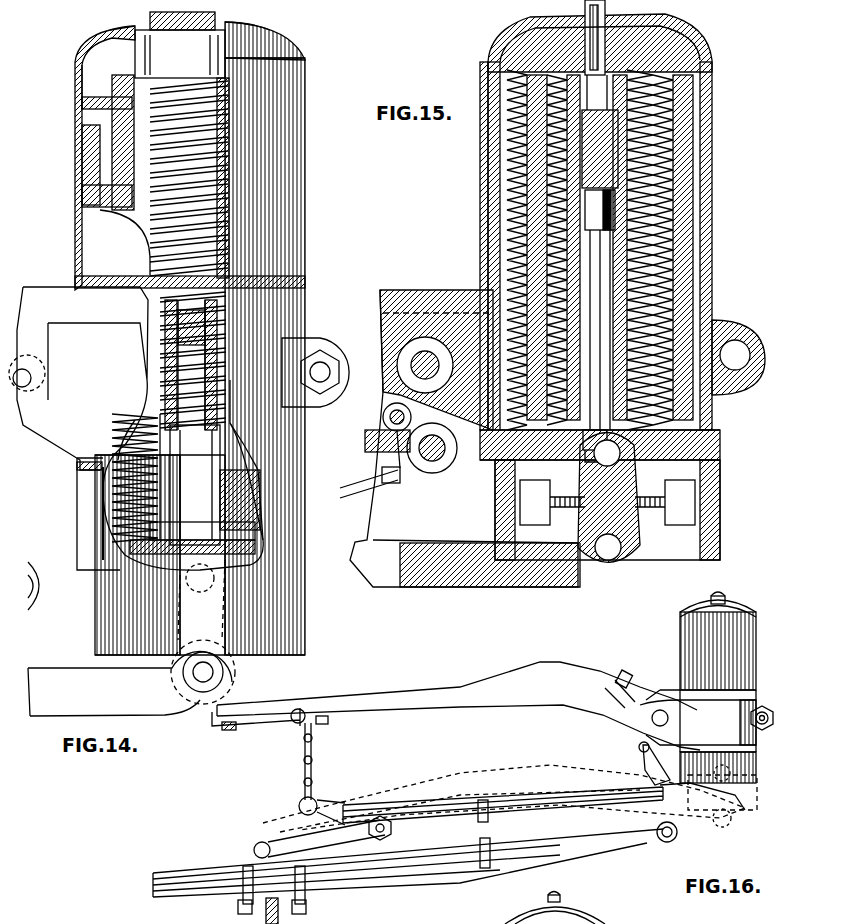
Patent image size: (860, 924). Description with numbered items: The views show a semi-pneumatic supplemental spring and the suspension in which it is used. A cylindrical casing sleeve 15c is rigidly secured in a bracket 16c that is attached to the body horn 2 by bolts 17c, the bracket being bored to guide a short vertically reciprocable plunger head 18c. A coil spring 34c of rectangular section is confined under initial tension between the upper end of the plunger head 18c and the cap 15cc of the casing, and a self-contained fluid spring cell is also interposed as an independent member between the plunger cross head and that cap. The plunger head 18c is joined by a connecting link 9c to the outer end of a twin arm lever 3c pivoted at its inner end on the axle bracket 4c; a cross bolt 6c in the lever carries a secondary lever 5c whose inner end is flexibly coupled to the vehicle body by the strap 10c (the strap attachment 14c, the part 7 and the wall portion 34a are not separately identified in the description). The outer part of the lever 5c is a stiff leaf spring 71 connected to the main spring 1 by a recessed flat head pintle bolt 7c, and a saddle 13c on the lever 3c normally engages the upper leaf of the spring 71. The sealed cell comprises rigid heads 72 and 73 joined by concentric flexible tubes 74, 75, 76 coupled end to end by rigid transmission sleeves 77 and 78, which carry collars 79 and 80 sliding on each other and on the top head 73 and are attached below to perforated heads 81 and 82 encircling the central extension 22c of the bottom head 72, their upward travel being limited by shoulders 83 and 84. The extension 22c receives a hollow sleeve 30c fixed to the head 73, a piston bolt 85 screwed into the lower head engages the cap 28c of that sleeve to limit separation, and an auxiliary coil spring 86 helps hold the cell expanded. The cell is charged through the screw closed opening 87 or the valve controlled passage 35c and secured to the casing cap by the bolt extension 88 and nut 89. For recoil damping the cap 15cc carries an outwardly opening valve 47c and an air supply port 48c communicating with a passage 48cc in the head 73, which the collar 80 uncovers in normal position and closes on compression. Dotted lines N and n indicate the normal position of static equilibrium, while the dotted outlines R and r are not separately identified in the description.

In FIG. 14, the main spring 1 is at (44, 590).
In FIG. 15, the main spring 1 is at (360, 488).
In FIG. 16, the main spring 1 is at (392, 878).
In FIG. 16, the body horn 2 is at (568, 666).
In FIG. 14, the twin arm lever 3c is at (59, 675).
In FIG. 15, the twin arm lever 3c is at (550, 587).
In FIG. 16, the twin arm lever 3c is at (728, 792).
In FIG. 16, the axle bracket 4c is at (253, 855).
In FIG. 16, the secondary lever 5c is at (307, 795).
In FIG. 16, the cross bolt 6c is at (388, 838).
In FIG. 14, the cap bolt 7 is at (132, 38).
In FIG. 15, the recessed flat head pintle bolt 7c is at (436, 473).
In FIG. 16, the recessed flat head pintle bolt 7c is at (668, 843).
In FIG. 14, the connecting link 9c is at (228, 662).
In FIG. 15, the connecting link 9c is at (622, 568).
In FIG. 16, the strap 10c is at (302, 775).
In FIG. 15, the saddle 13c is at (395, 465).
In FIG. 16, the saddle 13c is at (638, 750).
In FIG. 16, the frame bracket 14c is at (246, 722).
In FIG. 14, the cylindrical casing sleeve 15c is at (82, 230).
In FIG. 15, the cylindrical casing sleeve 15c is at (490, 142).
In FIG. 16, the cylindrical casing sleeve 15c is at (752, 654).
In FIG. 14, the casing cap 15cc is at (88, 60).
In FIG. 15, the casing cap 15cc is at (495, 47).
In FIG. 16, the casing cap 15cc is at (745, 606).
In FIG. 14, the bracket 16c is at (45, 295).
In FIG. 15, the bracket 16c is at (412, 290).
In FIG. 16, the bracket 16c is at (666, 690).
In FIG. 14, the bolts 17c is at (35, 378).
In FIG. 15, the bolts 17c is at (410, 362).
In FIG. 16, the bolts 17c is at (627, 672).
In FIG. 14, the plunger head 18c is at (98, 612).
In FIG. 15, the plunger head 18c is at (700, 473).
In FIG. 14, the central extension of bottom head 22c is at (175, 528).
In FIG. 15, the central extension of bottom head 22c is at (530, 262).
In FIG. 14, the sleeve cap 28c is at (230, 362).
In FIG. 14, the hollow sleeve 30c is at (225, 121).
In FIG. 15, the hollow sleeve 30c is at (505, 163).
In FIG. 14, the inner wall 34a is at (82, 153).
In FIG. 15, the coil spring 34c is at (712, 282).
In FIG. 15, the valve controlled passage 35c is at (485, 68).
In FIG. 14, the outwardly opening valve 47c is at (140, 30).
In FIG. 15, the outwardly opening valve 47c is at (565, 22).
In FIG. 14, the air supply port 48c is at (225, 25).
In FIG. 15, the air supply port 48c is at (620, 15).
In FIG. 15, the passage 48cc is at (690, 40).
In FIG. 15, the stiff leaf spring 71 is at (365, 436).
In FIG. 16, the stiff leaf spring 71 is at (438, 800).
In FIG. 14, the bottom head 72 is at (260, 548).
In FIG. 15, the bottom head 72 is at (650, 445).
In FIG. 15, the top head 73 is at (650, 30).
In FIG. 14, the flexible tube 74 is at (100, 497).
In FIG. 15, the flexible tube 74 is at (705, 112).
In FIG. 14, the flexible tube 75 is at (135, 460).
In FIG. 15, the flexible tube 75 is at (700, 152).
In FIG. 14, the flexible tube 76 is at (150, 420).
In FIG. 15, the flexible tube 76 is at (700, 200).
In FIG. 14, the rigid transmission sleeve 77 is at (82, 192).
In FIG. 15, the rigid transmission sleeve 77 is at (690, 137).
In FIG. 14, the rigid transmission sleeve 78 is at (80, 100).
In FIG. 15, the rigid transmission sleeve 78 is at (690, 182).
In FIG. 14, the collar 79 is at (95, 118).
In FIG. 15, the collar 79 is at (700, 90).
In FIG. 14, the collar 80 is at (80, 73).
In FIG. 15, the collar 80 is at (712, 63).
In FIG. 14, the perforated head 81 is at (110, 515).
In FIG. 15, the perforated head 81 is at (700, 432).
In FIG. 14, the perforated head 82 is at (140, 443).
In FIG. 15, the perforated head 82 is at (705, 414).
In FIG. 14, the shoulder 83 is at (216, 486).
In FIG. 14, the shoulder 84 is at (155, 392).
In FIG. 14, the piston bolt 85 is at (193, 332).
In FIG. 15, the piston bolt 85 is at (590, 200).
In FIG. 14, the auxiliary coil spring 86 is at (225, 208).
In FIG. 15, the auxiliary coil spring 86 is at (548, 212).
In FIG. 15, the screw closed opening 87 is at (585, 455).
In FIG. 14, the bolt extension 88 is at (180, 45).
In FIG. 15, the bolt extension 88 is at (585, 8).
In FIG. 16, the nut 89 is at (727, 596).
In FIG. 16, the dotted line of normal position N is at (230, 830).
In FIG. 16, the rebound position R is at (150, 875).
In FIG. 16, the rebound outline r is at (760, 778).
In FIG. 16, the dotted line of normal position n is at (776, 816).